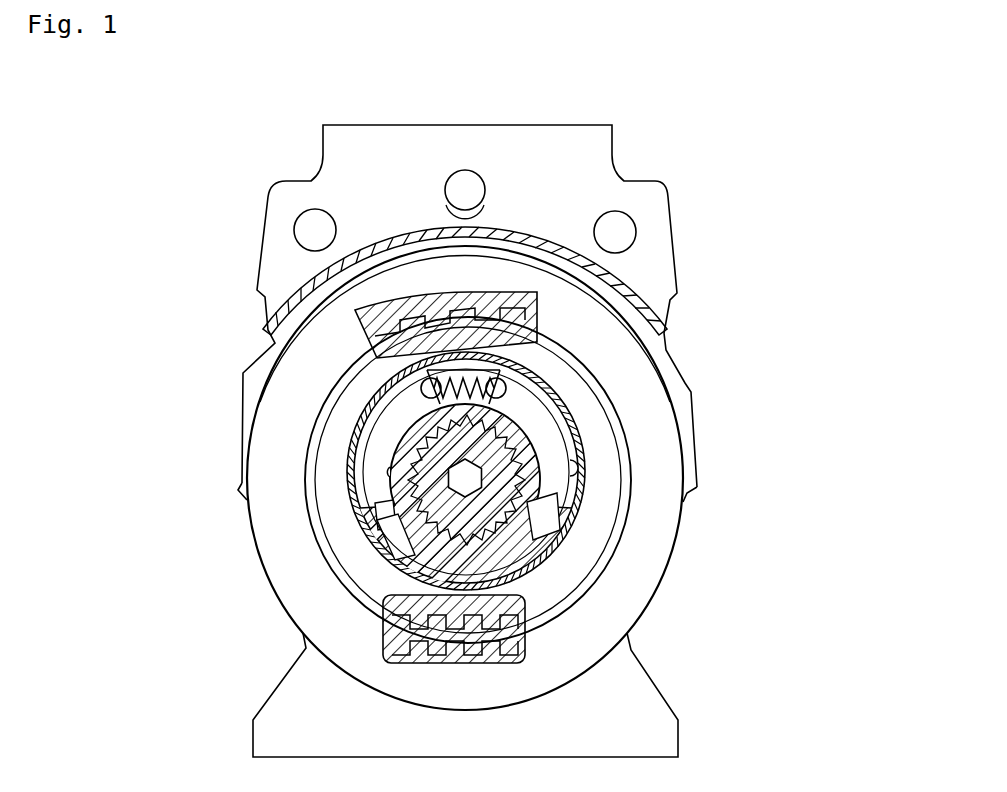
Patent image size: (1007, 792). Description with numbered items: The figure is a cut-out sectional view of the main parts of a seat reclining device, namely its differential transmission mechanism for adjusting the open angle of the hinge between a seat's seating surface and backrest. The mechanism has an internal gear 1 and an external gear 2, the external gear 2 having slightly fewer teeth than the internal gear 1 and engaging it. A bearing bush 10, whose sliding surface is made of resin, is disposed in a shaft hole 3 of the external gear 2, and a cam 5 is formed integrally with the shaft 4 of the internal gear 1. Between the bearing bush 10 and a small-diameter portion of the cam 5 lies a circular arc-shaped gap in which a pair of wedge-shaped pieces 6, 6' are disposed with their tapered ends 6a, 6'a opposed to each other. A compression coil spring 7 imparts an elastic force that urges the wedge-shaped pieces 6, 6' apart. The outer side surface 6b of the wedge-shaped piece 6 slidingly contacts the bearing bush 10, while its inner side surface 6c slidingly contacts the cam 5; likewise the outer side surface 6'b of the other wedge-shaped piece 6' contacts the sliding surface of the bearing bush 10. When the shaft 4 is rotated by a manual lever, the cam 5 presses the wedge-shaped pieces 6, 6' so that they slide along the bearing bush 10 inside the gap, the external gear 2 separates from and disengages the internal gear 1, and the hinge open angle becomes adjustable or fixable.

The internal gear 1 is at (508, 297).
The external gear 2 is at (540, 345).
The shaft hole 3 is at (563, 487).
The shaft 4 is at (505, 450).
The cam 5 is at (545, 553).
The wedge-shaped piece 6 is at (337, 452).
The tapered end 6a is at (377, 517).
The outer side surface 6b is at (388, 474).
The inner side surface 6c is at (387, 520).
The wedge-shaped piece 6' is at (577, 450).
The tapered end 6'a is at (672, 540).
The outer side surface 6'b is at (689, 455).
The compression coil spring 7 is at (377, 353).
The bearing bush 10 is at (390, 550).